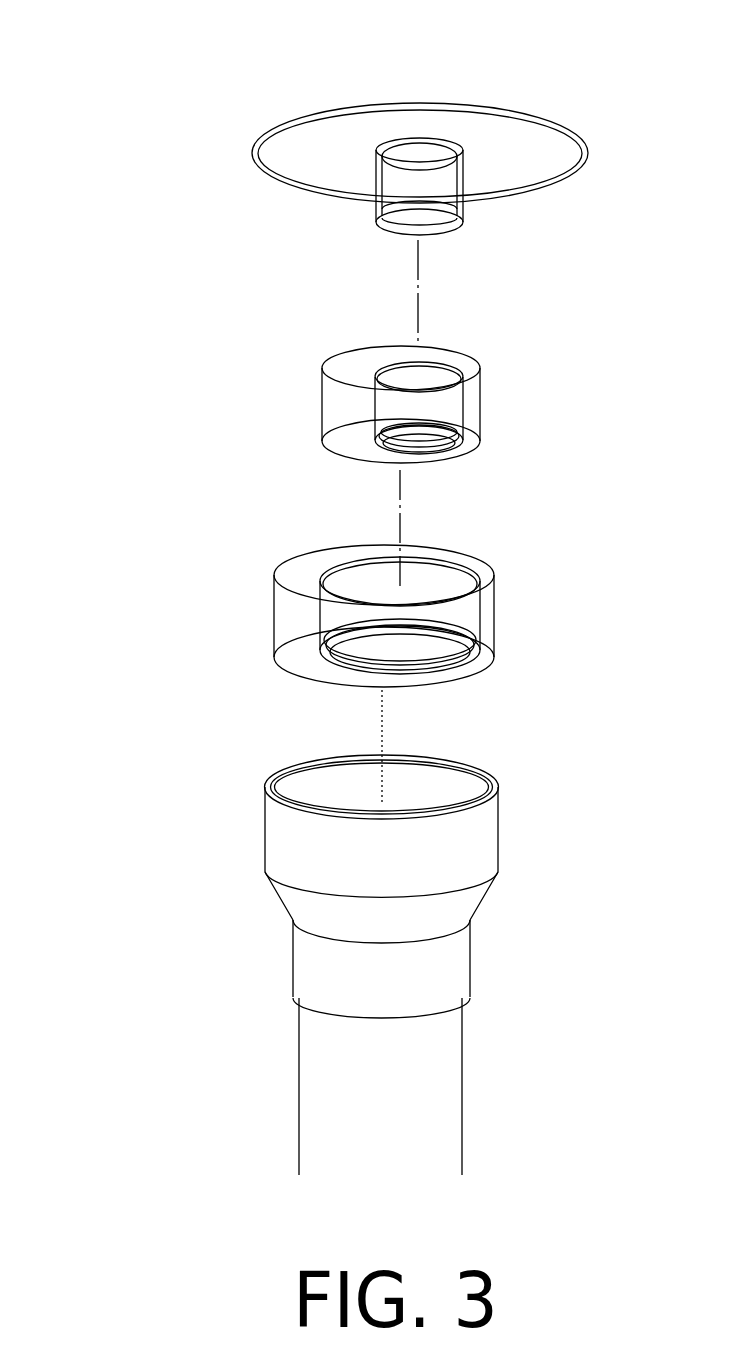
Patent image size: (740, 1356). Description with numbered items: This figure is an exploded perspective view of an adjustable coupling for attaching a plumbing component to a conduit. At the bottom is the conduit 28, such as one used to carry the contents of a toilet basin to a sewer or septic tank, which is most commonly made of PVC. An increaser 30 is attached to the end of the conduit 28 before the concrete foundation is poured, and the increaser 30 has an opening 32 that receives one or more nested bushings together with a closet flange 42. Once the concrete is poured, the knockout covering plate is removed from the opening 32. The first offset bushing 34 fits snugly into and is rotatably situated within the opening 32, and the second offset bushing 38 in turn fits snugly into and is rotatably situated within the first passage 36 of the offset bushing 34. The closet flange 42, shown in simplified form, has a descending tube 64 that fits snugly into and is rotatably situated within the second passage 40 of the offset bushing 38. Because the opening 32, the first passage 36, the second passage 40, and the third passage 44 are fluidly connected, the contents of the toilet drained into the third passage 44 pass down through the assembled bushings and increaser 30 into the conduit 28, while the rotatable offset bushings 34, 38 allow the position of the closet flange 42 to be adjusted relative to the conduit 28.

The conduit 28 is at (440, 1083).
The increaser 30 is at (483, 842).
The opening 32 is at (280, 773).
The offset bushing 34 is at (300, 573).
The first passage 36 is at (455, 578).
The offset bushing 38 is at (345, 372).
The second passage 40 is at (442, 378).
The closet flange 42 is at (308, 145).
The third passage 44 is at (437, 137).
The descending tube 64 is at (465, 216).